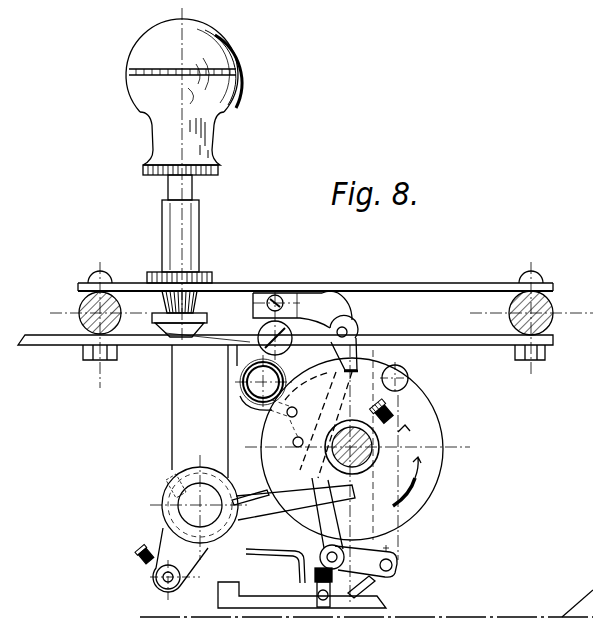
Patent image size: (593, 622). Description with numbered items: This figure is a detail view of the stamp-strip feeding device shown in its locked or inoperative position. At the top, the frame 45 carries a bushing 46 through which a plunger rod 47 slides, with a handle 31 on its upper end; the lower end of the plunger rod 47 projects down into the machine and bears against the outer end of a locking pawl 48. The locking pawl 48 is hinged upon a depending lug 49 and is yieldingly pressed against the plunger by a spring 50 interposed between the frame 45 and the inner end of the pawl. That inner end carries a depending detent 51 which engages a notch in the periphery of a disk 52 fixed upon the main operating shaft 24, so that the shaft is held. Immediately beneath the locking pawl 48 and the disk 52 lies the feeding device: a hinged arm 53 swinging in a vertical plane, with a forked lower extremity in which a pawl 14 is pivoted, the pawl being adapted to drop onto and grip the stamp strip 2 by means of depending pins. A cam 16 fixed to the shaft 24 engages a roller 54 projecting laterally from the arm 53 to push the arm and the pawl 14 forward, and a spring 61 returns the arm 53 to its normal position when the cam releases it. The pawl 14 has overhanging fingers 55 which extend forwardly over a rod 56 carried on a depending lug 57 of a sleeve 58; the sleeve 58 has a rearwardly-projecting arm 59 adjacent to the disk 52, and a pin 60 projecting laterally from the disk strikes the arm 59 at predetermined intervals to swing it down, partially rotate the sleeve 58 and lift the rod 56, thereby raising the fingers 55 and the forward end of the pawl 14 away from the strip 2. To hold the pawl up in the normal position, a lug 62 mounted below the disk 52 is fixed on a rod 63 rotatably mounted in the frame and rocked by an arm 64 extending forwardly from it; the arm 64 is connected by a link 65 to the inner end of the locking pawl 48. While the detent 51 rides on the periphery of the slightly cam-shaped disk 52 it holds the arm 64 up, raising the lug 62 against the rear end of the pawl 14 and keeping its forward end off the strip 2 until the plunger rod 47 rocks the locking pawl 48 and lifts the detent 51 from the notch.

The stamp strip 2 is at (506, 617).
The pawl 14 is at (222, 588).
The cam 16 is at (405, 426).
The main operating shaft 24 is at (360, 452).
The handle 31 is at (235, 93).
The frame 45 is at (447, 283).
The bushing 46 is at (189, 236).
The plunger rod 47 is at (186, 190).
The locking pawl 48 is at (190, 338).
The depending lug 49 is at (277, 297).
The spring 50 is at (333, 292).
The detent 51 is at (355, 343).
The disk 52 is at (430, 420).
The hinged arm 53 is at (304, 582).
The roller 54 is at (296, 440).
The overhanging fingers 55 is at (246, 551).
The rod 56 is at (158, 580).
The depending lug 57 is at (168, 545).
The sleeve 58 is at (180, 507).
The rearwardly-projecting arm 59 is at (293, 502).
The pin 60 is at (408, 377).
The spring 61 is at (277, 380).
The lug 62 is at (380, 588).
The rod 63 is at (394, 566).
The arm 64 is at (366, 562).
The link 65 is at (320, 560).